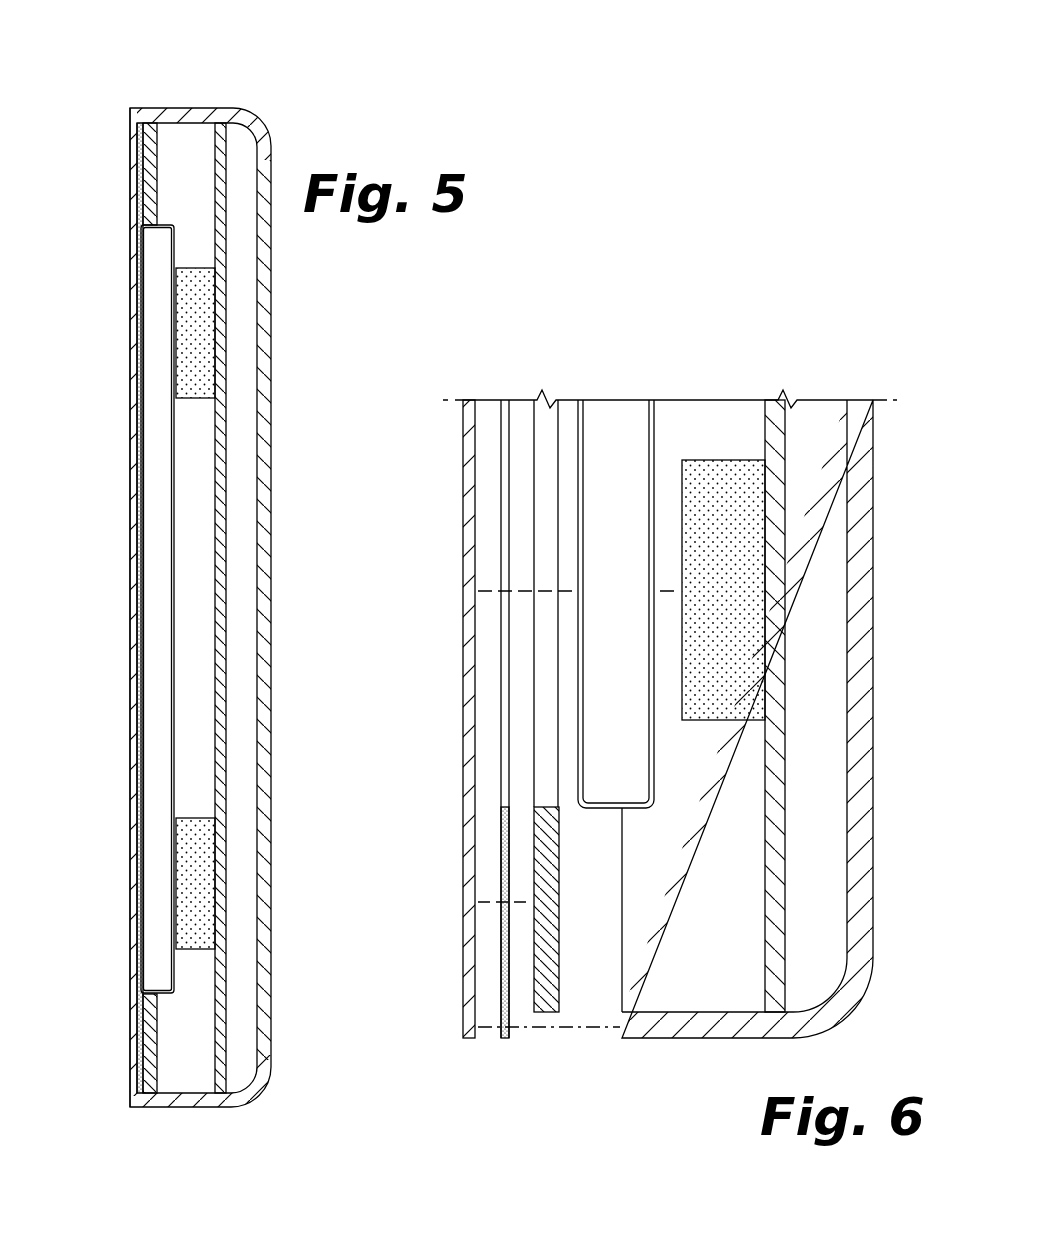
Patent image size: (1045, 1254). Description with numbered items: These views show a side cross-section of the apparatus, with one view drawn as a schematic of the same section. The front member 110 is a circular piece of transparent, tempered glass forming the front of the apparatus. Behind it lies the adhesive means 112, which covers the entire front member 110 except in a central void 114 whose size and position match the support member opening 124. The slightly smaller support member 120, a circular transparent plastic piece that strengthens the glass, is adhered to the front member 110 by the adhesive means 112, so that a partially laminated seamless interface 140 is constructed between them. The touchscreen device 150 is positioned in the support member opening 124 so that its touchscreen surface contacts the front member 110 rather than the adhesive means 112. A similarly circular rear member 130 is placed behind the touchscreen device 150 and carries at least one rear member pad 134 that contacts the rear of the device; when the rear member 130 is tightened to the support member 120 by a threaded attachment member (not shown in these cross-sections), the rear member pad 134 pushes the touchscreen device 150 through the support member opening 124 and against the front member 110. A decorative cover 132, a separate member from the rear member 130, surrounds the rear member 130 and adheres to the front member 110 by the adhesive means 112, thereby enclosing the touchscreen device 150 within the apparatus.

In FIG. 5, the front member 110 is at (130, 182).
In FIG. 6, the front member 110 is at (470, 677).
In FIG. 5, the adhesive means 112 is at (143, 146).
In FIG. 6, the adhesive means 112 is at (505, 895).
In FIG. 6, the central void 114 is at (505, 528).
In FIG. 5, the support member 120 is at (153, 132).
In FIG. 6, the support member 120 is at (545, 987).
In FIG. 6, the support member opening 124 is at (544, 481).
In FIG. 5, the rear member 130 is at (219, 428).
In FIG. 6, the rear member 130 is at (775, 465).
In FIG. 5, the decorative cover 132 is at (243, 120).
In FIG. 6, the decorative cover 132 is at (858, 582).
In FIG. 5, the rear member pad 134 is at (192, 862).
In FIG. 6, the rear member pad 134 is at (735, 495).
In FIG. 6, the partially laminated seamless interface 140 is at (553, 1047).
In FIG. 5, the touchscreen device 150 is at (153, 295).
In FIG. 6, the touchscreen device 150 is at (612, 442).